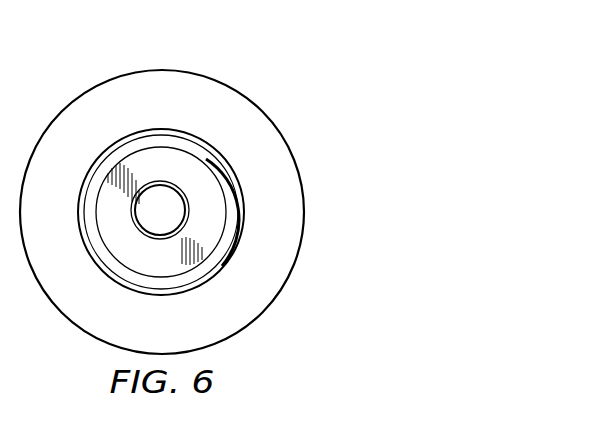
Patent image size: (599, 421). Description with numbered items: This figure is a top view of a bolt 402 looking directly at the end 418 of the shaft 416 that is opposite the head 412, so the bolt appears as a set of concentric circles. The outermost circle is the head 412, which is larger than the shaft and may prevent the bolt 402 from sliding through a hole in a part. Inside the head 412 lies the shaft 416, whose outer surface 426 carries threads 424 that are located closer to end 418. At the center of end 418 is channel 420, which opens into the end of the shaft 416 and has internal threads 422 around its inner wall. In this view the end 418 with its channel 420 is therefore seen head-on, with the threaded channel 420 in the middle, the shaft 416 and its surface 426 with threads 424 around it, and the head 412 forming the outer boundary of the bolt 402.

The bolt 402 is at (133, 54).
The head 412 is at (204, 71).
The shaft 416 is at (102, 150).
The surface 426 is at (207, 142).
The threads 424 is at (229, 181).
The end 418 is at (165, 263).
The threads 422 is at (138, 206).
The channel 420 is at (167, 217).